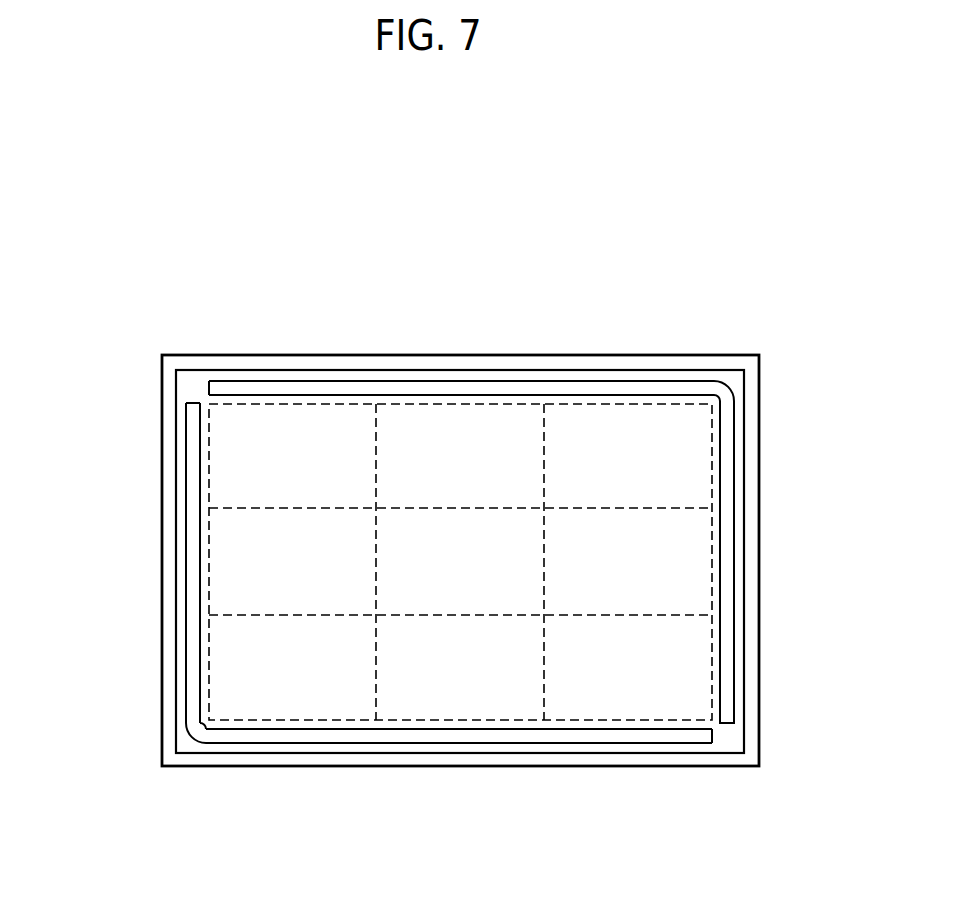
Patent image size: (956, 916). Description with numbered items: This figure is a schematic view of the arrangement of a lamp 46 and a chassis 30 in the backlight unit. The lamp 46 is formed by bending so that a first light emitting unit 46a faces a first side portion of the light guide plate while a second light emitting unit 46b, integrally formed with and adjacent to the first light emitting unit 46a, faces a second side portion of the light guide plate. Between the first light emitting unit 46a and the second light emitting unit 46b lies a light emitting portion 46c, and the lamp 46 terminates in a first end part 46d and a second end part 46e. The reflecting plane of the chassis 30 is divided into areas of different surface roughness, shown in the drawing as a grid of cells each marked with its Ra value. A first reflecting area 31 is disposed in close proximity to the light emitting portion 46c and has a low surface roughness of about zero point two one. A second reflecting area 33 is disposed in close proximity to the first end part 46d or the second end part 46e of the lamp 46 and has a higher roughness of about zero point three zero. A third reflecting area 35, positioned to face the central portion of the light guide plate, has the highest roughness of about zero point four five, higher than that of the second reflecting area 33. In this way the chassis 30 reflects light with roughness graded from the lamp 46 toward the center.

The chassis 30 is at (496, 774).
The first reflecting area 31 is at (590, 412).
The second reflecting area 33 is at (284, 412).
The third reflecting area 35 is at (468, 612).
The lamp 46 is at (454, 606).
The first light emitting unit 46a is at (192, 500).
The second light emitting unit 46b is at (396, 738).
The light emitting portion 46c is at (192, 744).
The first end part 46d is at (195, 403).
The second end part 46e is at (712, 735).